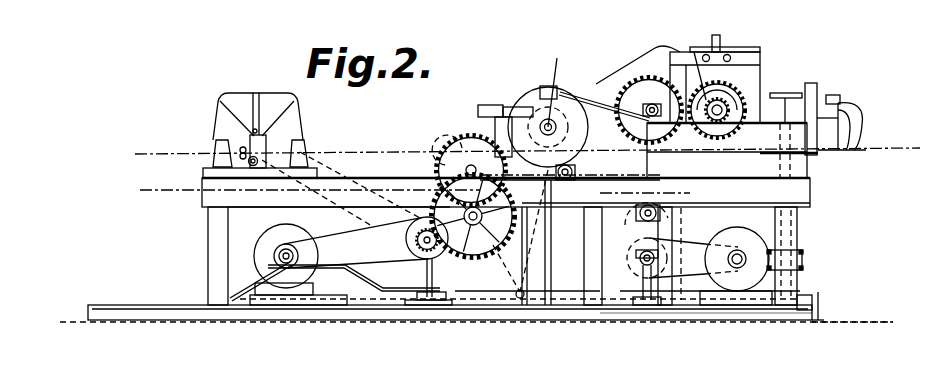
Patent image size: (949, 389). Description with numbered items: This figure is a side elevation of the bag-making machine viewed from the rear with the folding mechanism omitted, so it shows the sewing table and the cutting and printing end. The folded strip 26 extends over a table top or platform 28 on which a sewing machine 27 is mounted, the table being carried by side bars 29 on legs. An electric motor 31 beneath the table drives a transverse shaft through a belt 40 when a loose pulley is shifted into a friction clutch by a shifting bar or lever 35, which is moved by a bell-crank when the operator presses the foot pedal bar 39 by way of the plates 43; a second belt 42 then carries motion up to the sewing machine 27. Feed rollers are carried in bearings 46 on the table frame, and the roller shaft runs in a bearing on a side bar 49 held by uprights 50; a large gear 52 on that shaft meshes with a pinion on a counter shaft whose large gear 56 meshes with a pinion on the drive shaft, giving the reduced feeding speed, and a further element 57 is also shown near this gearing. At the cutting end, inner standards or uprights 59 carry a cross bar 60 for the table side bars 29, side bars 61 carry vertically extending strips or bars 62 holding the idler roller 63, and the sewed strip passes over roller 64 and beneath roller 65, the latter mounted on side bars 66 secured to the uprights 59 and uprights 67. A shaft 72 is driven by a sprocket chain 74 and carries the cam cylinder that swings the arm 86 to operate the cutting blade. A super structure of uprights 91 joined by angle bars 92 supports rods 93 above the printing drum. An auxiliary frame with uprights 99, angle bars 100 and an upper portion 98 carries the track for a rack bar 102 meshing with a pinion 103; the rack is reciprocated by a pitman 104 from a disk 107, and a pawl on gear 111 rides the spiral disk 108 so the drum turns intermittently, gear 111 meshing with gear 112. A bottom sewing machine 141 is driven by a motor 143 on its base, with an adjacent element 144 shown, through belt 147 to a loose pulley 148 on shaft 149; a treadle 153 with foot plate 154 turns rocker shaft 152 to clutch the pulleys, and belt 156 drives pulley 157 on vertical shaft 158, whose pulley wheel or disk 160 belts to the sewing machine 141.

The folded strip 26 is at (160, 190).
The sewing machine 27 is at (250, 141).
The table top or platform 28 is at (203, 173).
The side bars 29 is at (571, 204).
The electric motor 31 is at (303, 247).
The shifting bar or lever 35 is at (426, 270).
The foot pedal bar 39 is at (354, 280).
The belt 40 is at (356, 242).
The belt 42 is at (347, 178).
The plates 43 is at (250, 288).
The bearings 46 is at (286, 250).
The side bar 49 is at (248, 206).
The uprights 50 is at (208, 242).
The large gear 52 is at (456, 145).
The large gear 56 is at (556, 174).
The pulley 57 is at (412, 240).
The inner standards or uprights 59 is at (588, 262).
The cross bar 60 is at (585, 208).
The side bars 61 is at (548, 306).
The vertically extending strips or bars 62 is at (500, 257).
The roller 63 is at (516, 300).
The roller 64 is at (640, 190).
The roller 65 is at (640, 217).
The side bars 66 is at (706, 204).
The uprights 67 is at (797, 216).
The shaft 72 is at (544, 100).
The sprocket chain 74 is at (486, 122).
The arm 86 is at (565, 90).
The uprights 91 is at (670, 72).
The angle bars 92 is at (740, 47).
The rods 93 is at (718, 35).
The upper portion of auxiliary frame 98 is at (808, 157).
The uprights 99 is at (797, 235).
The angle bars 100 is at (735, 179).
The rack bar 102 is at (727, 150).
The pinion 103 is at (770, 147).
The pitman 104 is at (620, 106).
The disk 107 is at (635, 176).
The disk 108 is at (694, 52).
The gear 111 is at (730, 92).
The gear 112 is at (649, 110).
The sewing machine 141 is at (858, 118).
The motor 143 is at (738, 286).
The base 144 is at (760, 303).
The belt 147 is at (687, 273).
The pulley 148 is at (640, 297).
The shaft 149 is at (645, 262).
The rocker shaft 152 is at (808, 295).
The lever or treadle 153 is at (822, 301).
The foot plate 154 is at (826, 319).
The belt 156 is at (683, 247).
The pulley 157 is at (802, 258).
The shaft 158 is at (790, 92).
The pulley wheel or disk 160 is at (818, 86).